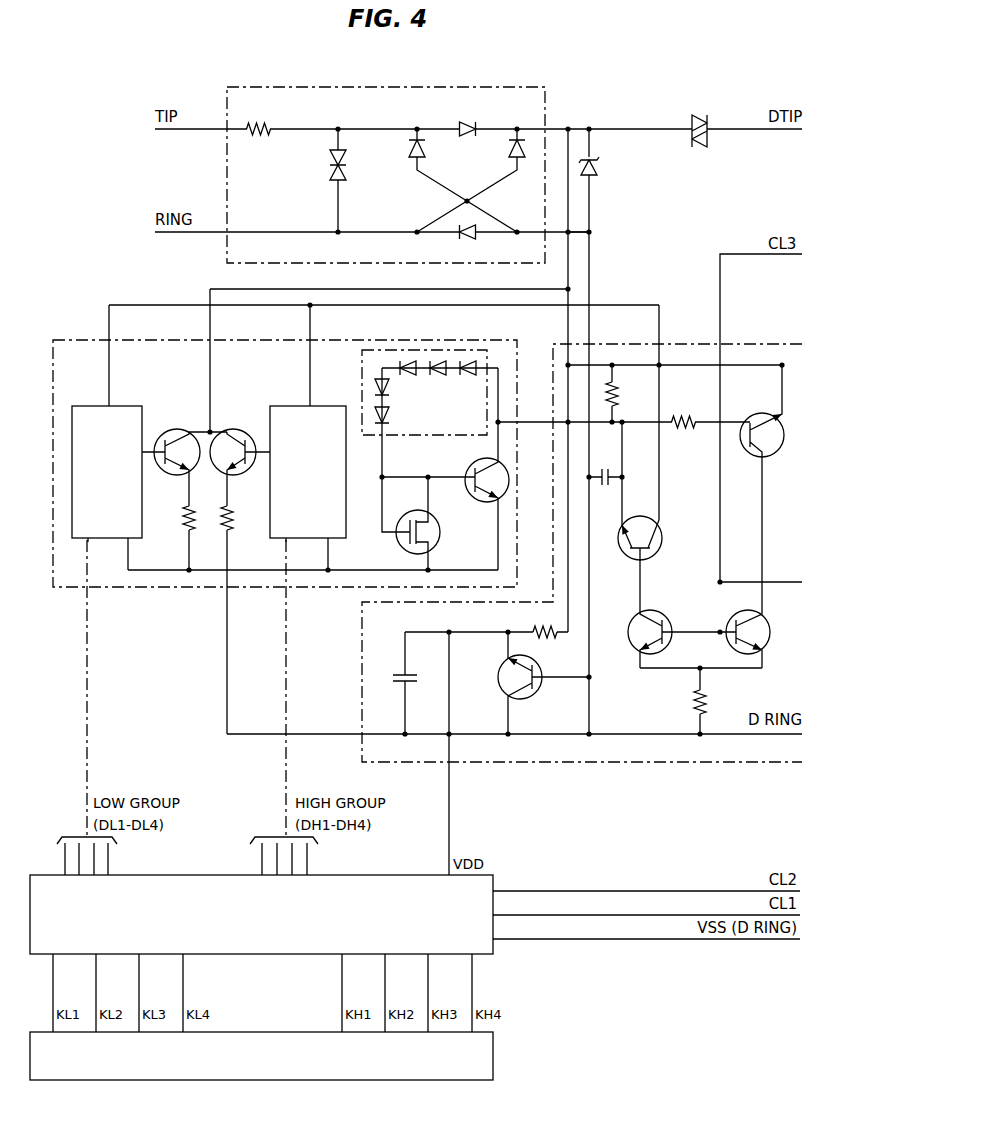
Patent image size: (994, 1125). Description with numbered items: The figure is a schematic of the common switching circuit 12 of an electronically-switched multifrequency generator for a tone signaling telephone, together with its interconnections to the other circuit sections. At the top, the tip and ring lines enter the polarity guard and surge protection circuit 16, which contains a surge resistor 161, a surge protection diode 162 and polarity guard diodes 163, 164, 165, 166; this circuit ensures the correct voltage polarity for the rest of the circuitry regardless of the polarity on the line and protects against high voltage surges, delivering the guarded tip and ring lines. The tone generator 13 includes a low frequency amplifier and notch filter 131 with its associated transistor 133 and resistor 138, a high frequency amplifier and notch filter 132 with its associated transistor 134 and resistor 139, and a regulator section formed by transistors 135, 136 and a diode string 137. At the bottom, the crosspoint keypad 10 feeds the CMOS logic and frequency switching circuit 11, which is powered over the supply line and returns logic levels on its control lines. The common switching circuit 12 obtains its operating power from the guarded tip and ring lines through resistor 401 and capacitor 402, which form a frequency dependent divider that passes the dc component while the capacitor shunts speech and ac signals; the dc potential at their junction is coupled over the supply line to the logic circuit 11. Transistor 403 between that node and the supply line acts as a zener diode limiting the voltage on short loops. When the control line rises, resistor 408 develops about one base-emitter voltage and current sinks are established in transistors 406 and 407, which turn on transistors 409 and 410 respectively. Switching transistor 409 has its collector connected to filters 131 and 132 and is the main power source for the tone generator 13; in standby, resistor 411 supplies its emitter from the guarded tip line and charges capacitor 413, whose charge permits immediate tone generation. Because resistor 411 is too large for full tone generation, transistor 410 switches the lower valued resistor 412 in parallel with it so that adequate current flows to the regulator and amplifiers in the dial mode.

The crosspoint keypad 10 is at (481, 1056).
The CMOS logic and frequency switching circuit 11 is at (176, 886).
The common switching circuit 12 is at (647, 750).
The tone generator 13 is at (88, 348).
The polarity guard and surge protection circuit 16 is at (374, 96).
The low frequency amplifier and notch filter 131 is at (122, 420).
The high frequency amplifier and notch filter 132 is at (292, 416).
The transistor 133 is at (184, 457).
The transistor 134 is at (240, 457).
The transistor 135 is at (444, 469).
The transistor 136 is at (427, 525).
The diode string 137 is at (362, 384).
The resistor 138 is at (175, 539).
The resistor 139 is at (244, 620).
The surge resistor 161 is at (262, 116).
The surge protection diode 162 is at (324, 180).
The polarity guard diode 163 is at (470, 116).
The polarity guard diode 164 is at (469, 180).
The polarity guard diode 165 is at (449, 179).
The polarity guard diode 166 is at (470, 242).
The resistor 401 is at (486, 622).
The capacitor 402 is at (394, 683).
The transistor 403 is at (531, 683).
The transistor 406 is at (682, 628).
The transistor 407 is at (762, 636).
The resistor 408 is at (701, 699).
The switching transistor 409 is at (656, 458).
The transistor 410 is at (762, 488).
The resistor 411 is at (628, 393).
The resistor 412 is at (685, 412).
The capacitor 413 is at (605, 473).